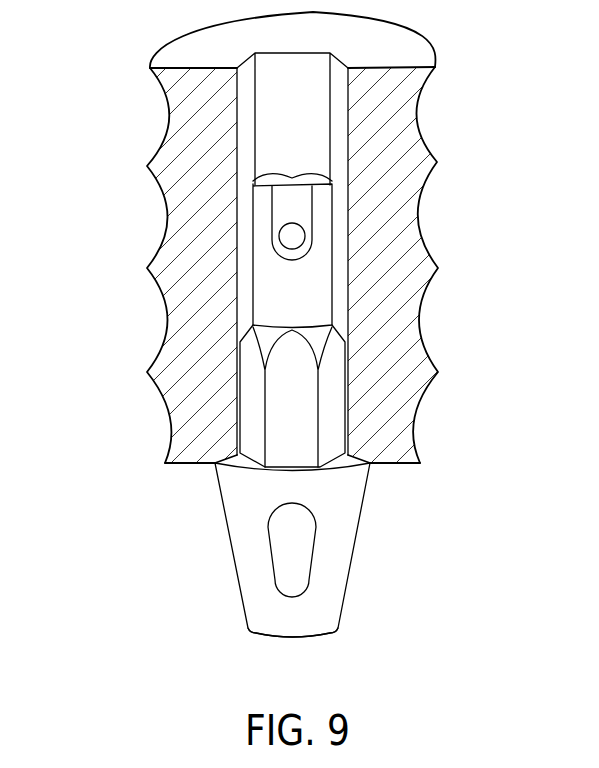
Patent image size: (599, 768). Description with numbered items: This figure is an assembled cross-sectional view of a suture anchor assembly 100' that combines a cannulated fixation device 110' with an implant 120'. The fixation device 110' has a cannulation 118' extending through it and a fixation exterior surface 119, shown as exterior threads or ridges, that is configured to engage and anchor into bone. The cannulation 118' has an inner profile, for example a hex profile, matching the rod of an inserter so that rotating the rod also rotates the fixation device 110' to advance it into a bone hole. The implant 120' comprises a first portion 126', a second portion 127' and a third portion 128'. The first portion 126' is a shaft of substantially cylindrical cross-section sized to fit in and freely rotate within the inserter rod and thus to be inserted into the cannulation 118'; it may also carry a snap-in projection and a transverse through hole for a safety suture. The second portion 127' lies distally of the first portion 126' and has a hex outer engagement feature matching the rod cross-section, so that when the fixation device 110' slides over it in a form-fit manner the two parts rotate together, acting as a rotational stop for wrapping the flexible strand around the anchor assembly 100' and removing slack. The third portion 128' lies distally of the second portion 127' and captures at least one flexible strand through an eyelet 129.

The suture anchor assembly 100' is at (299, 318).
The cannulated fixation device 110' is at (299, 250).
The cannulation 118' is at (292, 254).
The fixation exterior surface 119 is at (152, 253).
The first portion 126' is at (379, 251).
The second portion 127' is at (223, 396).
The third portion 128' is at (257, 550).
The eyelet 129 is at (300, 533).
The implant 120' is at (350, 607).